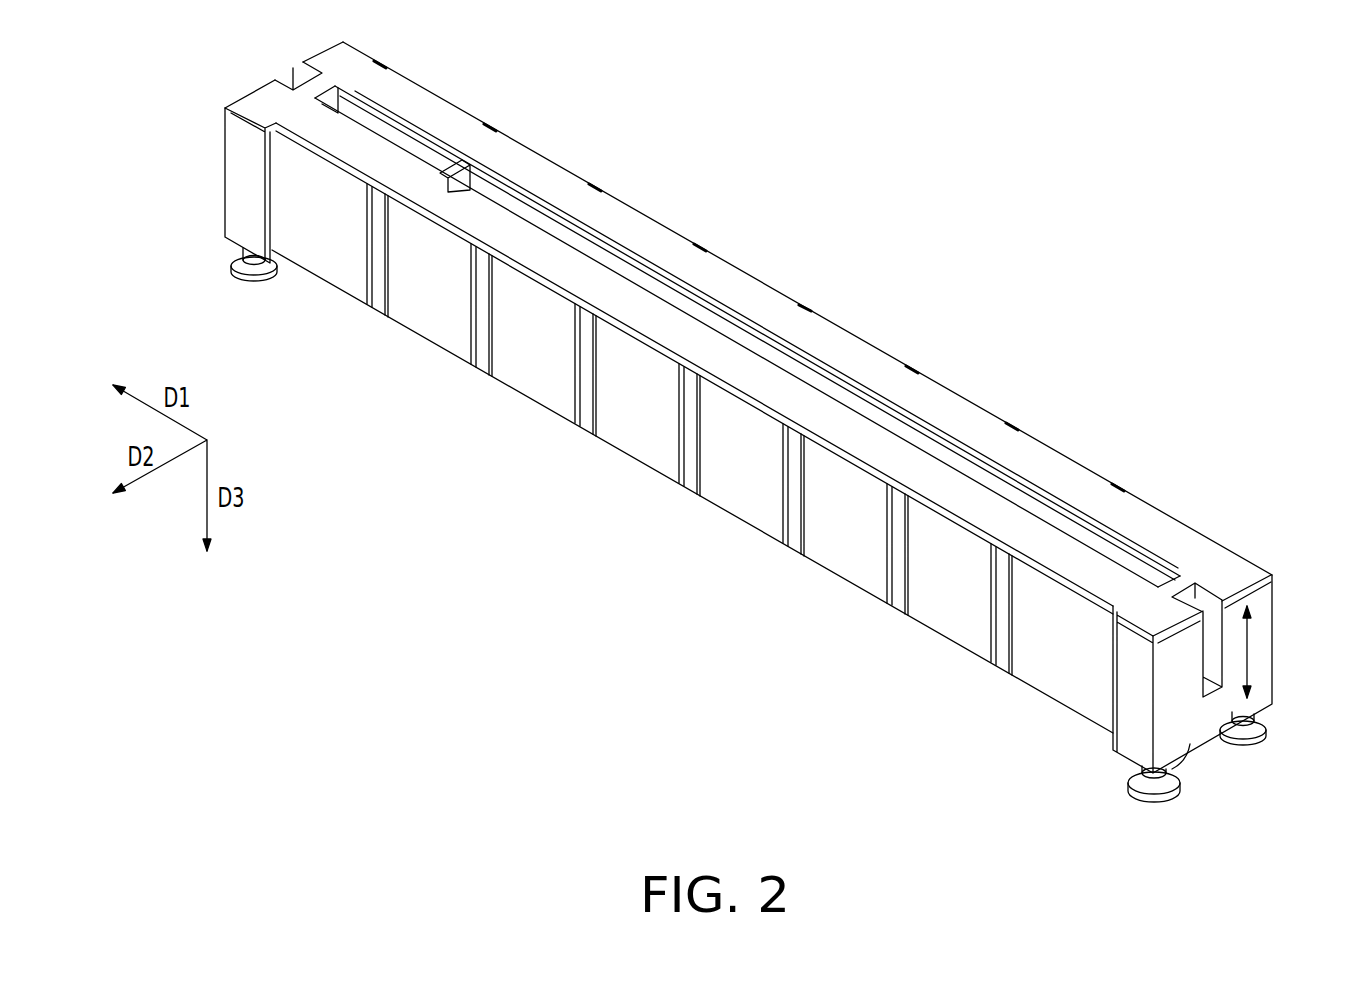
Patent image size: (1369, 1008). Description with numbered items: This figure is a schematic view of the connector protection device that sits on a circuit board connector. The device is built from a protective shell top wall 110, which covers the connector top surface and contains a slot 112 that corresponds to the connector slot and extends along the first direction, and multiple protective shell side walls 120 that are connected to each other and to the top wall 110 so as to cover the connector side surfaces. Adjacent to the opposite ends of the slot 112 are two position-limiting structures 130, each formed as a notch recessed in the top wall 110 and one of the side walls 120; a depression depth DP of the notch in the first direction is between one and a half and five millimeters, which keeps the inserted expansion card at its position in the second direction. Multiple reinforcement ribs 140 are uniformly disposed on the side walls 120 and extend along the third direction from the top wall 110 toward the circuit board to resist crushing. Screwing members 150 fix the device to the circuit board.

The protective shell top wall 110 is at (943, 413).
The slot 112 is at (666, 290).
The protective shell side walls 120 is at (1077, 668).
The position-limiting structures 130 is at (297, 76).
The reinforcement ribs 140 is at (892, 578).
The screwing members 150 is at (1177, 790).
The depression depth DP is at (1249, 655).